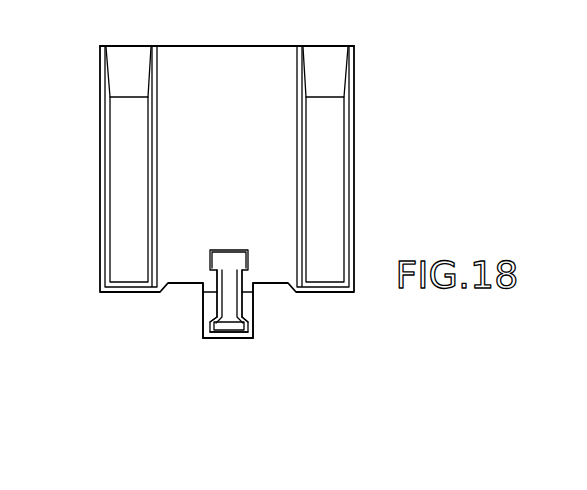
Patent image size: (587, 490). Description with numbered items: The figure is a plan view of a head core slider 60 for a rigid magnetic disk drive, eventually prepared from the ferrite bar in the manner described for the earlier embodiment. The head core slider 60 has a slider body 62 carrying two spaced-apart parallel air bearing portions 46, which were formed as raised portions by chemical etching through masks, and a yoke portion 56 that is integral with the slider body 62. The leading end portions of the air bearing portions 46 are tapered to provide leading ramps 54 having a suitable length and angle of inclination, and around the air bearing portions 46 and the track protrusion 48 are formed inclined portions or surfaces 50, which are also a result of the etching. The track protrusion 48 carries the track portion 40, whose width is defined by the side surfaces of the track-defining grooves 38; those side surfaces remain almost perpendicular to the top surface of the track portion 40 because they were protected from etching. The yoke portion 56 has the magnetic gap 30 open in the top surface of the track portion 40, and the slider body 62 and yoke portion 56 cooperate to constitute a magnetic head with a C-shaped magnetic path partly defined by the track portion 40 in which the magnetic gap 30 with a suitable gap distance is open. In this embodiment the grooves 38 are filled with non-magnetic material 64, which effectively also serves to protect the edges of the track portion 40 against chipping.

The magnetic gap 30 is at (260, 293).
The track-defining grooves 38 is at (222, 335).
The track portion 40 is at (229, 334).
The air bearing portions 46 is at (118, 172).
The track protrusion 48 is at (229, 242).
The inclined portions or surfaces 50 is at (103, 237).
The leading ramps 54 is at (133, 58).
The yoke portion 56 is at (196, 346).
The head core slider 60 is at (80, 90).
The slider body 62 is at (258, 58).
The non-magnetic material 64 is at (218, 280).